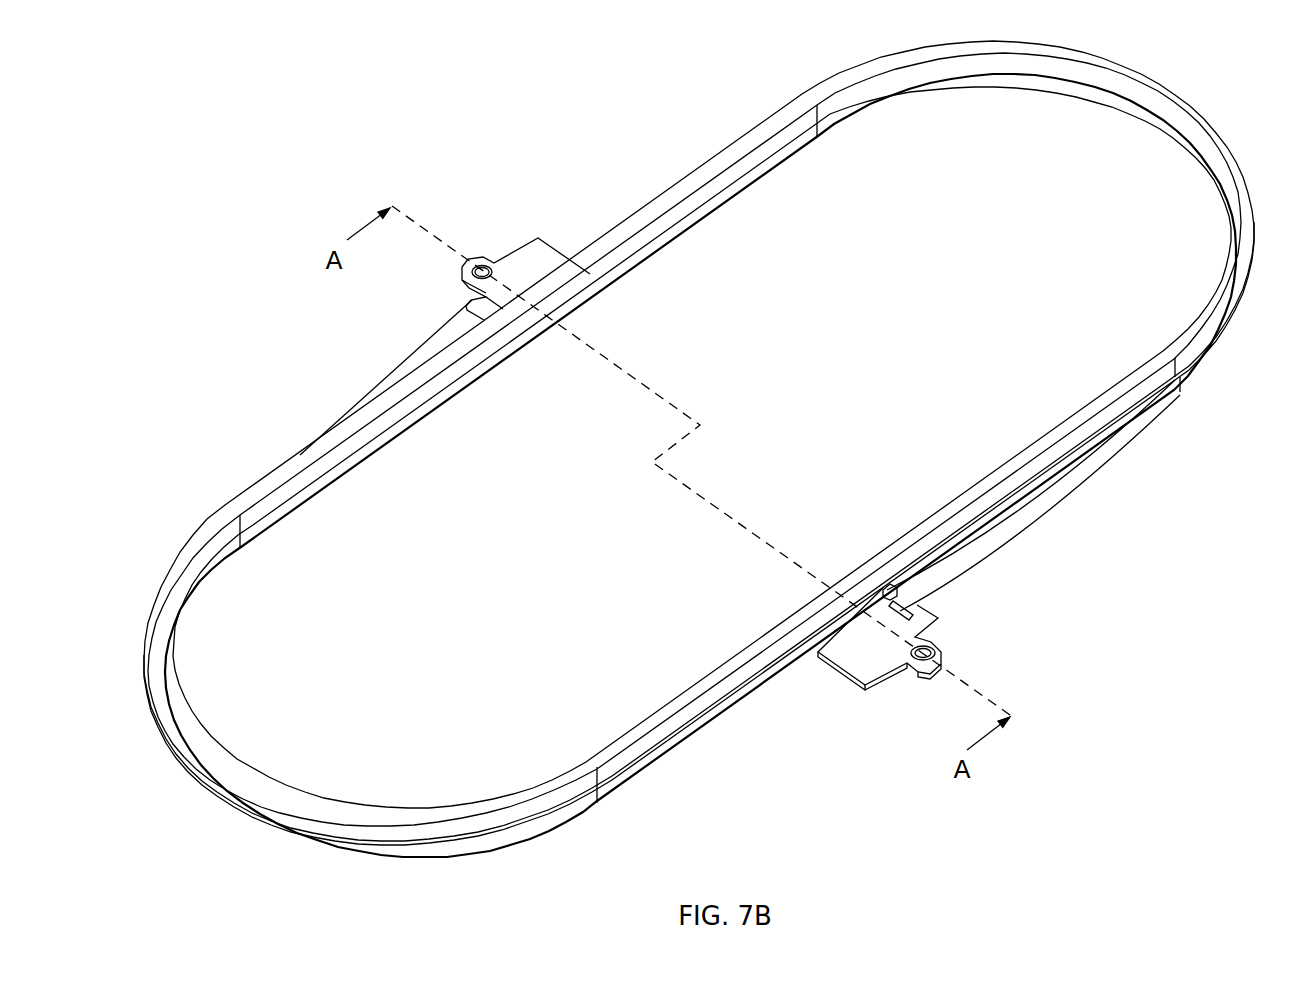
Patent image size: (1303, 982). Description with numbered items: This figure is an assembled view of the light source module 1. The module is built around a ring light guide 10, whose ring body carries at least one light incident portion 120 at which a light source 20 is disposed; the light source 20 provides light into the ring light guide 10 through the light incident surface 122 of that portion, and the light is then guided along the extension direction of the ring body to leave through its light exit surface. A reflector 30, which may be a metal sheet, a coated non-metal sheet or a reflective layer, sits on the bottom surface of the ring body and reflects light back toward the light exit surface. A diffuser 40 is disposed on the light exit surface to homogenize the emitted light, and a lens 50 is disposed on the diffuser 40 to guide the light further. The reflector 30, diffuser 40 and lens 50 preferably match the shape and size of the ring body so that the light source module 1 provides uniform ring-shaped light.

The light source module 1 is at (244, 90).
The ring light guide 10 is at (1075, 92).
The light source 20 is at (503, 308).
The reflector 30 is at (1107, 105).
The diffuser 40 is at (1020, 73).
The lens 50 is at (987, 47).
The light incident portion 120 is at (990, 528).
The light incident surface 122 is at (925, 622).